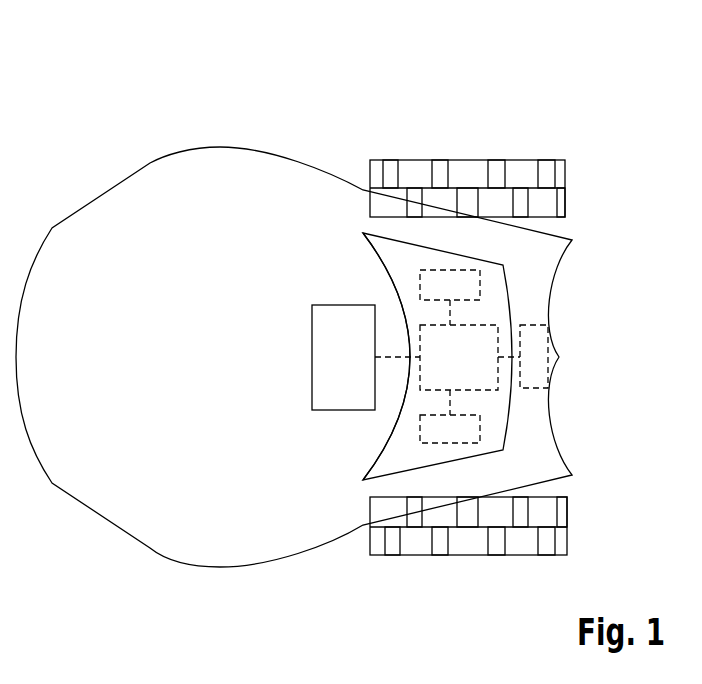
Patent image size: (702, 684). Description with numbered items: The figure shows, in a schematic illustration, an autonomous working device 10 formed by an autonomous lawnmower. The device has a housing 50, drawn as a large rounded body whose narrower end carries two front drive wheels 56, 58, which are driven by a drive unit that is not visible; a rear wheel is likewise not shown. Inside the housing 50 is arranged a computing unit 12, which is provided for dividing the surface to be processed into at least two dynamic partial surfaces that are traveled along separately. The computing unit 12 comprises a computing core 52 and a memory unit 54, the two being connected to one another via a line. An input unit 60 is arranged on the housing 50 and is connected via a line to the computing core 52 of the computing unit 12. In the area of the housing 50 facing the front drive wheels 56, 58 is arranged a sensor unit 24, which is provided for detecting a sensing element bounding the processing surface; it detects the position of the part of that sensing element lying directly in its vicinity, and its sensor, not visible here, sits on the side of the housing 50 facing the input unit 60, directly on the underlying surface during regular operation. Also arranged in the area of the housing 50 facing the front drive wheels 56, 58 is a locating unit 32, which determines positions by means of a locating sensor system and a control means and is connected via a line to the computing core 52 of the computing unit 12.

The autonomous working device 10 is at (363, 118).
The computing unit 12 is at (522, 312).
The sensor unit 24 is at (535, 365).
The locating unit 32 is at (428, 280).
The housing 50 is at (223, 158).
The computing core 52 is at (408, 378).
The memory unit 54 is at (433, 440).
The front drive wheel 56 is at (466, 548).
The front drive wheel 58 is at (466, 160).
The input unit 60 is at (330, 337).